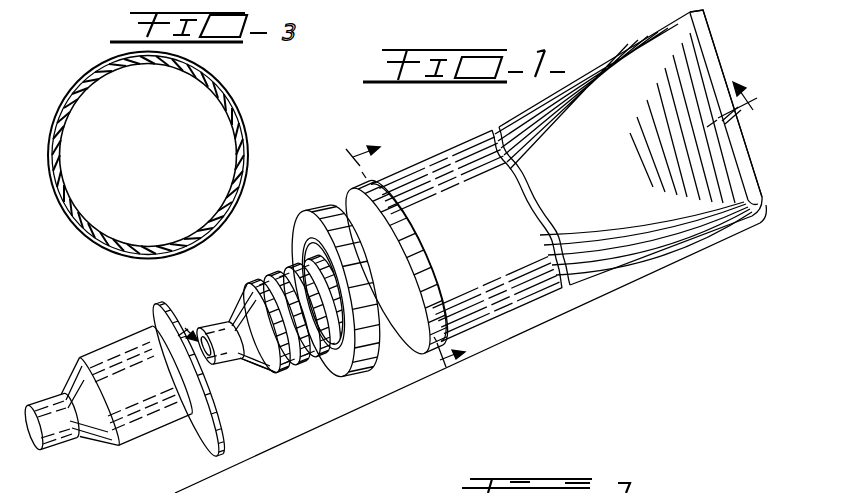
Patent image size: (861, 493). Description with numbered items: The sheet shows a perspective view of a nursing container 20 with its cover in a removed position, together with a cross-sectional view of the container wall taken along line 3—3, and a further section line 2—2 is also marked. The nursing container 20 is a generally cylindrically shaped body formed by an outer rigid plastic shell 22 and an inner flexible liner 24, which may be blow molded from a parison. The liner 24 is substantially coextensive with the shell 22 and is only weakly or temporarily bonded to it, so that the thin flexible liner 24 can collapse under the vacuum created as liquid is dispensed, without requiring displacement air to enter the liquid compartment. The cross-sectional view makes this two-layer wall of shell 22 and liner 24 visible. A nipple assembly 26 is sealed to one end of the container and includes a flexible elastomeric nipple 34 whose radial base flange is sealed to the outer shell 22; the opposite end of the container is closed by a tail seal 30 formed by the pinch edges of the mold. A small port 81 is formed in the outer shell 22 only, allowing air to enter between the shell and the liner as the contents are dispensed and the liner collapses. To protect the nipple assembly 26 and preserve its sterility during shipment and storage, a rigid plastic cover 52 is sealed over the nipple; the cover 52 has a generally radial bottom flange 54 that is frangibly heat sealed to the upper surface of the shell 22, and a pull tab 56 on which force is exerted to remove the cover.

In FIG. 1, the nursing container 20 is at (378, 411).
In FIG. 3, the outer rigid plastic shell 22 is at (222, 98).
In FIG. 1, the outer rigid plastic shell 22 is at (613, 237).
In FIG. 3, the inner flexible liner 24 is at (214, 93).
In FIG. 1, the nipple assembly 26 is at (268, 250).
In FIG. 1, the tail seal 30 is at (702, 32).
In FIG. 1, the flexible nipple 34 is at (275, 370).
In FIG. 1, the cover 52 is at (138, 416).
In FIG. 1, the bottom flange 54 is at (155, 306).
In FIG. 1, the pull tab 56 is at (208, 433).
In FIG. 1, the small port 81 is at (725, 112).
In FIG. 1, the section line 2- 2 is at (471, 211).
In FIG. 1, the section line 3- 3 is at (397, 257).